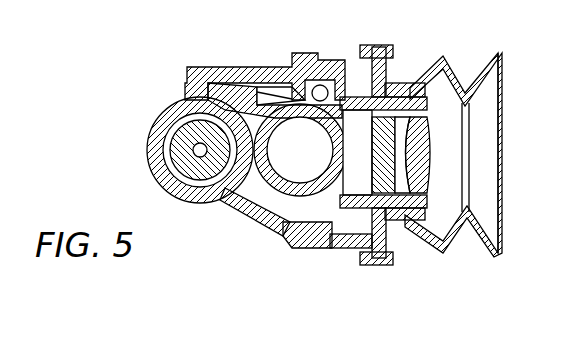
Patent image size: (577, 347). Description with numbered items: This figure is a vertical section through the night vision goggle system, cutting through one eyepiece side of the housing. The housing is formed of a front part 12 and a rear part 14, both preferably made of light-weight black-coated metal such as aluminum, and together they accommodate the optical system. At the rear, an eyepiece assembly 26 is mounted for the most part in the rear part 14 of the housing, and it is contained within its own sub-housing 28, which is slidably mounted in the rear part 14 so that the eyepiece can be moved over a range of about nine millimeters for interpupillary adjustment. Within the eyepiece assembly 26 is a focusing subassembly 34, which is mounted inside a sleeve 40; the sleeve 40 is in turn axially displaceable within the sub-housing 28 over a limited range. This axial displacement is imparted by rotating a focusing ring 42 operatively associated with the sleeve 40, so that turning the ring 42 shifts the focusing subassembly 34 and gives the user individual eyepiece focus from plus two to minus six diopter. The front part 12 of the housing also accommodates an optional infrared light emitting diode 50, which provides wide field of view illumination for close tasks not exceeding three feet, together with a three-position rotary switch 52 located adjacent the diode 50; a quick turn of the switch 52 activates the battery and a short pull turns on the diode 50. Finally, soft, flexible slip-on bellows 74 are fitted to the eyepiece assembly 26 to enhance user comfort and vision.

The front part of the housing 12 is at (280, 243).
The rear part of the housing 14 is at (315, 250).
The eyepiece assembly 26 is at (406, 240).
The sub-housing 28 is at (265, 197).
The focusing subassembly 34 is at (436, 147).
The sleeve 40 is at (428, 108).
The focusing ring 42 is at (375, 45).
The infrared light emitting diode 50 is at (184, 92).
The three-position rotary switch 52 is at (165, 132).
The bellows 74 is at (449, 62).